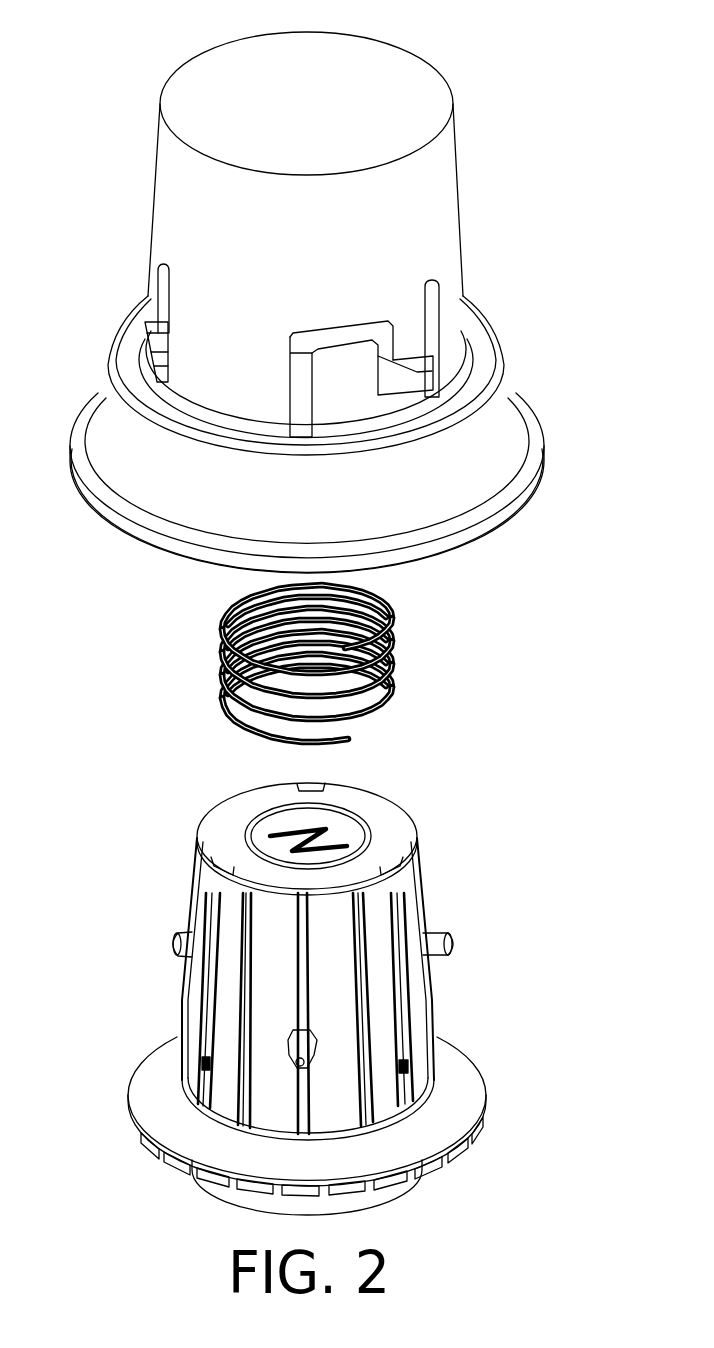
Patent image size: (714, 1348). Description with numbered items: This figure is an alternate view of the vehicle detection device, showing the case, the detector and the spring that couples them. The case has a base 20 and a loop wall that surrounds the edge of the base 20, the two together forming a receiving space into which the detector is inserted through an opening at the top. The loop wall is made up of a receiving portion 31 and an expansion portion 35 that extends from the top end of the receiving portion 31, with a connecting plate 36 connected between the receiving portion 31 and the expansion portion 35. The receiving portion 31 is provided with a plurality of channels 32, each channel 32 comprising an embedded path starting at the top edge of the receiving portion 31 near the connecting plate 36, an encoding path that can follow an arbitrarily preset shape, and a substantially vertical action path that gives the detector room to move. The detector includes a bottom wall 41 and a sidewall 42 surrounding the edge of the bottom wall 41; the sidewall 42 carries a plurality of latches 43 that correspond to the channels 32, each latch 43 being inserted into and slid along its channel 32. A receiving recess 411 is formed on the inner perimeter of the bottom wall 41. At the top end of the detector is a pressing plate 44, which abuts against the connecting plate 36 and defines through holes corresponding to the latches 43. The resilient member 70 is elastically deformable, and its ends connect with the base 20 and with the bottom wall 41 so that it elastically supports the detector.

The base 20 is at (217, 72).
The receiving portion 31 is at (430, 213).
The channel 32 is at (405, 374).
The expansion portion 35 is at (487, 447).
The connecting plate 36 is at (133, 332).
The bottom wall 41 is at (395, 840).
The receiving recess 411 is at (357, 828).
The sidewall 42 is at (272, 977).
The latch 43 is at (437, 953).
The pressing plate 44 is at (455, 1082).
The resilient member 70 is at (393, 622).